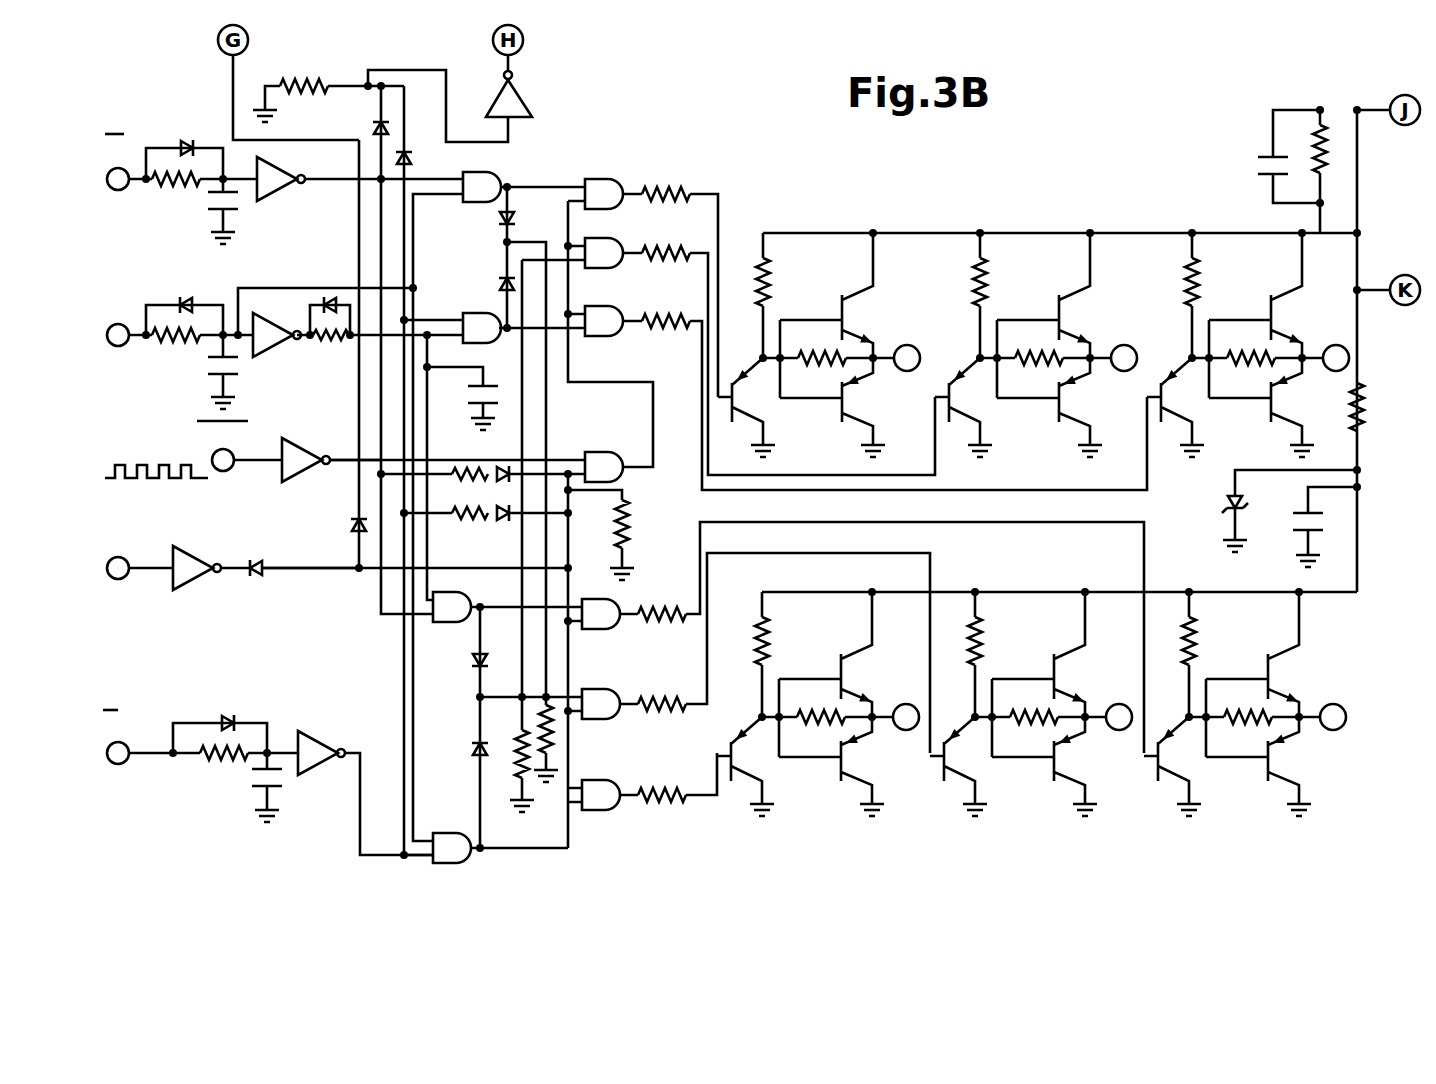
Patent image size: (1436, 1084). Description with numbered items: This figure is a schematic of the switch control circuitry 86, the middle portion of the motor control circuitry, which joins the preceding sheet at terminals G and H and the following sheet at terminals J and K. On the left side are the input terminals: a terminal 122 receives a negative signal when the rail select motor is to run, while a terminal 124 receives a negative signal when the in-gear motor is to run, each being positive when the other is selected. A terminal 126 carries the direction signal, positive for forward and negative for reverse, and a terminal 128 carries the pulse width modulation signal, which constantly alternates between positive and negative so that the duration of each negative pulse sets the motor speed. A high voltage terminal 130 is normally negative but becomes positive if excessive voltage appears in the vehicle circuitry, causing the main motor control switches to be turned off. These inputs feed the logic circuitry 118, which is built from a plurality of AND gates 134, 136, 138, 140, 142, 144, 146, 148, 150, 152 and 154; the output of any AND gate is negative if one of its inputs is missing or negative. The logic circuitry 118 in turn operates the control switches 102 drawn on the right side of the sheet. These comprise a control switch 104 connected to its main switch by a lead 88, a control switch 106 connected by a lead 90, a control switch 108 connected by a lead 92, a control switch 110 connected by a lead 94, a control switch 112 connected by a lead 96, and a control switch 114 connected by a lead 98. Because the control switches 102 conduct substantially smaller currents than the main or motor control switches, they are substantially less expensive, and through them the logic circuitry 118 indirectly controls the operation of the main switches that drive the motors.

The switch control circuitry 86 is at (1324, 90).
The lead 88 is at (878, 352).
The lead 90 is at (1309, 725).
The lead 92 is at (1092, 338).
The lead 94 is at (1088, 710).
The lead 96 is at (1303, 352).
The lead 98 is at (880, 705).
The control switches 102 is at (1069, 190).
The control switch 104 is at (744, 385).
The control switch 106 is at (1157, 770).
The control switch 108 is at (946, 385).
The control switch 110 is at (942, 775).
The control switch 112 is at (1160, 380).
The control switch 114 is at (735, 778).
The logic circuitry 118 is at (575, 150).
The terminal 122 is at (110, 187).
The terminal 124 is at (113, 763).
The terminal 126 is at (110, 344).
The terminal 128 is at (228, 470).
The high voltage terminal 130 is at (113, 578).
The AND gate 134 is at (483, 172).
The AND gate 136 is at (487, 314).
The AND gate 138 is at (450, 622).
The AND gate 140 is at (437, 834).
The AND gate 142 is at (608, 178).
The AND gate 144 is at (606, 240).
The AND gate 146 is at (606, 307).
The AND gate 148 is at (585, 454).
The AND gate 150 is at (590, 630).
The AND gate 152 is at (617, 720).
The AND gate 154 is at (600, 812).